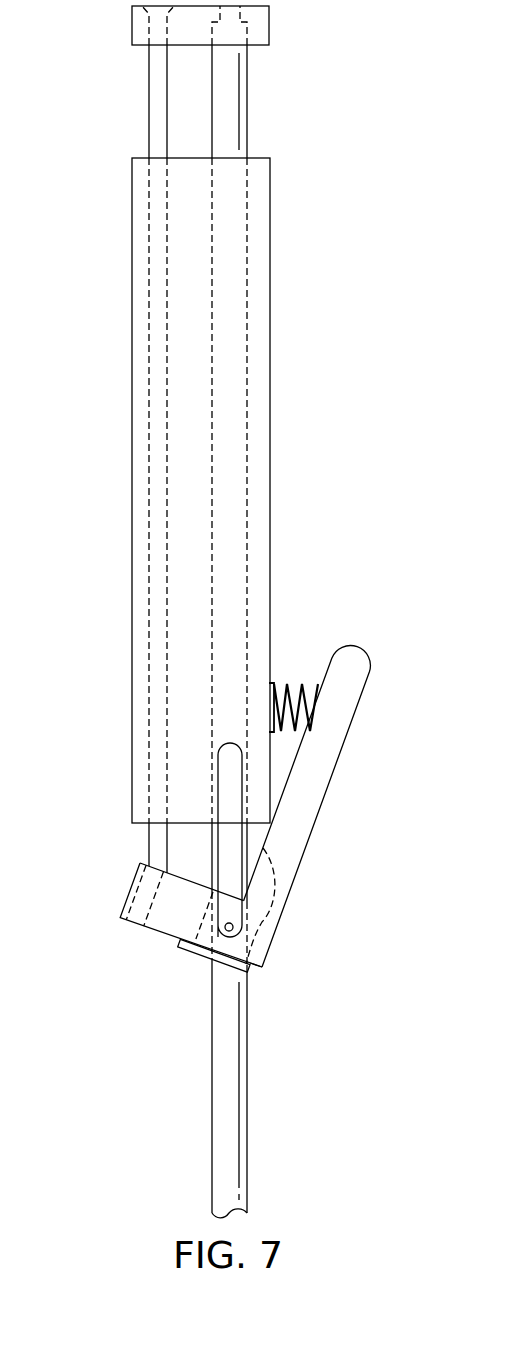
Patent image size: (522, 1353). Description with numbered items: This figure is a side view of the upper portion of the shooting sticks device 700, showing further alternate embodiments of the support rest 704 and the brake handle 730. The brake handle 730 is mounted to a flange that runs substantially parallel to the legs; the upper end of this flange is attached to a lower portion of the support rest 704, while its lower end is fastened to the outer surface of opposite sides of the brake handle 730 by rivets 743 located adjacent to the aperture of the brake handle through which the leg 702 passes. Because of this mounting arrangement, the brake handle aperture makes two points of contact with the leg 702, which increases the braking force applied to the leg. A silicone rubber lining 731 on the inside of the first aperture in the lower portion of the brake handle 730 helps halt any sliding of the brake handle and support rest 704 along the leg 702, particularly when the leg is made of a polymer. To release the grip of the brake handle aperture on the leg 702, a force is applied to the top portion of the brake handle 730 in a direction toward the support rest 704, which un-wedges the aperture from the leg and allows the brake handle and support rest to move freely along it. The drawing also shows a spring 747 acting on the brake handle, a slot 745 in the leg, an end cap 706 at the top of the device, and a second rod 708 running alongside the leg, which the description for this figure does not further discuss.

The shooting sticks device 700 is at (373, 167).
The leg 702 is at (248, 102).
The support rest 704 is at (131, 488).
The end cap 706 is at (132, 25).
The guide rod 708 is at (148, 102).
The brake handle 730 is at (303, 860).
The silicone rubber lining 731 is at (192, 953).
The rivets 743 is at (234, 922).
The slot 745 is at (230, 787).
The spring 747 is at (287, 683).